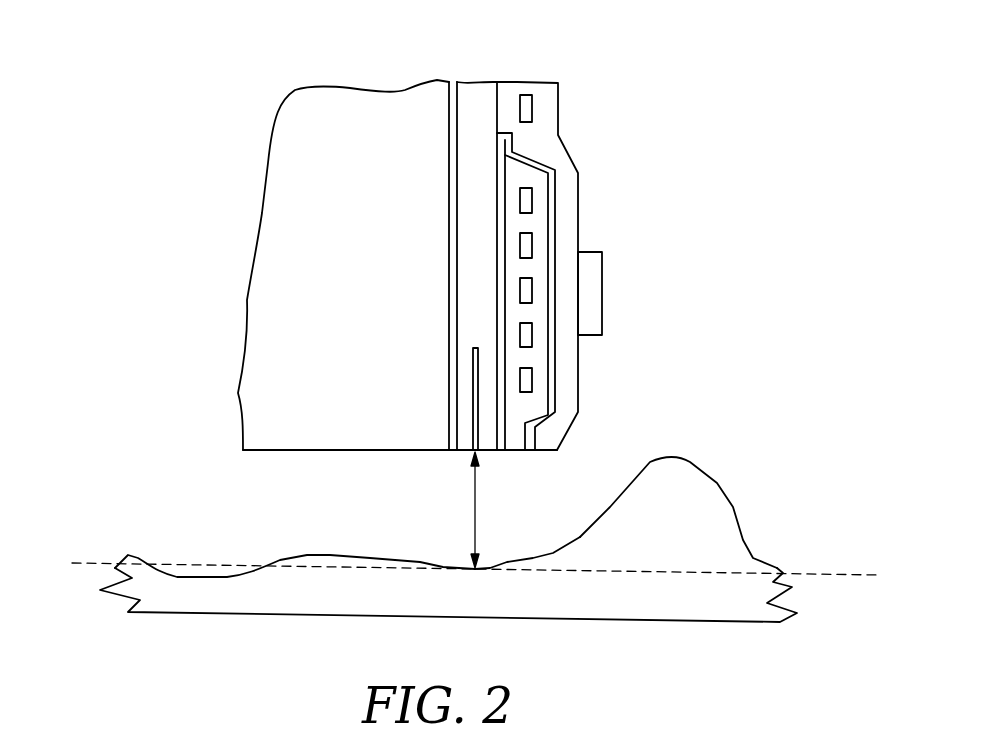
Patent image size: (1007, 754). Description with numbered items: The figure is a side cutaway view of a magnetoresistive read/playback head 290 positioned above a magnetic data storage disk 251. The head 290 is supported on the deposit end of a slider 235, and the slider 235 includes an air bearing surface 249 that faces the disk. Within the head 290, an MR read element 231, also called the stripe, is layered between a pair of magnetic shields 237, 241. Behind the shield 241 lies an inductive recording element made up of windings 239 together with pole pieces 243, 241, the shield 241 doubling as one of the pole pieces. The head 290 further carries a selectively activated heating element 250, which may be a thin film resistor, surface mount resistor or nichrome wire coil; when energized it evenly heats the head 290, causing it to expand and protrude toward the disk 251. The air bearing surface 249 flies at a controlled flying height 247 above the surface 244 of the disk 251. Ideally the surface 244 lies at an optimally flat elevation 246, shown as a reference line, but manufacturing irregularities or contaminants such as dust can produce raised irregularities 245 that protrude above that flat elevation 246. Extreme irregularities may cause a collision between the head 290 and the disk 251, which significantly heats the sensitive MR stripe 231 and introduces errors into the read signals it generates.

The slider 235 is at (290, 135).
The magnetic shield 237 is at (449, 179).
The read/playback head 290 is at (590, 65).
The windings 239 is at (532, 200).
The heating element 250 is at (602, 268).
The magnetic shield 241 is at (507, 313).
The pole piece 243 is at (557, 378).
The MR read element 231 is at (474, 374).
The air bearing surface 249 is at (372, 452).
The flying height 247 is at (472, 502).
The surface of the magnetic disk 244 is at (192, 575).
The raised irregularities 245 is at (732, 500).
The optimally flat elevation 246 is at (90, 562).
The magnetic disk 251 is at (148, 578).